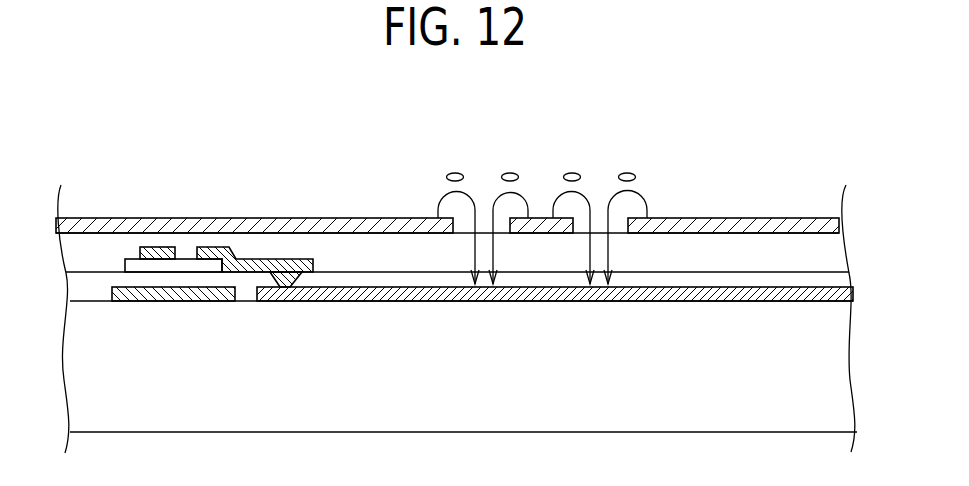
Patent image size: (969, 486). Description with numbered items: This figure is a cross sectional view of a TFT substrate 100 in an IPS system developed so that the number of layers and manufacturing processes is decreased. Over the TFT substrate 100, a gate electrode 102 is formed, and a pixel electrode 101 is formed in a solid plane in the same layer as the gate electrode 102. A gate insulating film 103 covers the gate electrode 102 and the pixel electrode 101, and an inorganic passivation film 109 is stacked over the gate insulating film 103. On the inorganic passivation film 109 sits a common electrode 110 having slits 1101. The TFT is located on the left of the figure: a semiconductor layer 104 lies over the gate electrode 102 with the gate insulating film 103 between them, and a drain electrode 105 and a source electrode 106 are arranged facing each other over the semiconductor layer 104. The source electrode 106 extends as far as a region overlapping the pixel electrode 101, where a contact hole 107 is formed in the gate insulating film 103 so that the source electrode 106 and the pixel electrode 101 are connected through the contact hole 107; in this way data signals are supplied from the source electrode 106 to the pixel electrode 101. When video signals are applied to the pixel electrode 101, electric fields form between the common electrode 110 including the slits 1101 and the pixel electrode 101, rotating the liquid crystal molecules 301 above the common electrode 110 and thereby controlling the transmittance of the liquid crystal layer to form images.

The TFT substrate 100 is at (793, 410).
The pixel electrode 101 is at (642, 289).
The gate electrode 102 is at (161, 290).
The gate insulating film 103 is at (90, 286).
The semiconductor layer 104 is at (187, 266).
The drain electrode 105 is at (158, 245).
The source electrode 106 is at (220, 245).
The contact hole 107 is at (288, 286).
The inorganic passivation film 109 is at (712, 250).
The common electrode 110 is at (313, 225).
The slits 1101 is at (482, 225).
The liquid crystal molecules 301 is at (448, 173).